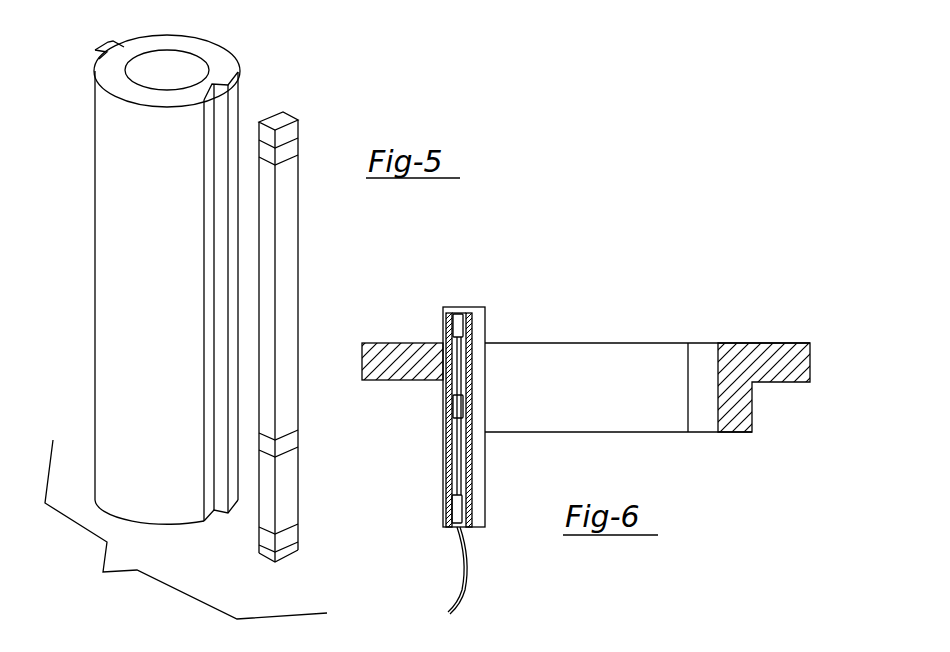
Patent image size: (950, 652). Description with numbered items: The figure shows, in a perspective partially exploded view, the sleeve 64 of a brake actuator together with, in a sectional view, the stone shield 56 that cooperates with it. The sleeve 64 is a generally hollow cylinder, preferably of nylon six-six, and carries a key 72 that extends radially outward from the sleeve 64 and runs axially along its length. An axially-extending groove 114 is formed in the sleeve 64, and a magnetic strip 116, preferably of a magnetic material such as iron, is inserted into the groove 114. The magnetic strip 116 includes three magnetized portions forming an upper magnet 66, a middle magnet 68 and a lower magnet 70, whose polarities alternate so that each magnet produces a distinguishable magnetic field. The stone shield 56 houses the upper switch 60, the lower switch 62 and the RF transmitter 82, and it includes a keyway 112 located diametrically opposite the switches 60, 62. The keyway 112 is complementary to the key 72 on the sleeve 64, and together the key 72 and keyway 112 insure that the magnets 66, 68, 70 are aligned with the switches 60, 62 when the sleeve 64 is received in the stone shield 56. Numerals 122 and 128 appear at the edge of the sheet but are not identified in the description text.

In FIG. 6, the stone shield 56 is at (591, 318).
In FIG. 6, the upper switch 60 is at (463, 325).
In FIG. 6, the lower switch 62 is at (452, 512).
In FIG. 5, the sleeve 64 is at (186, 529).
In FIG. 5, the upper magnet 66 is at (288, 118).
In FIG. 5, the middle magnet 68 is at (290, 432).
In FIG. 5, the lower magnet 70 is at (290, 525).
In FIG. 5, the key 72 is at (108, 43).
In FIG. 6, the RF transmitter 82 is at (453, 408).
In FIG. 6, the keyway 112 is at (703, 363).
In FIG. 5, the groove 114 is at (218, 160).
In FIG. 5, the magnetic strip 116 is at (298, 245).
In FIG. 5, the member 122 is at (342, 645).
In FIG. 5, the member 128 is at (118, 651).